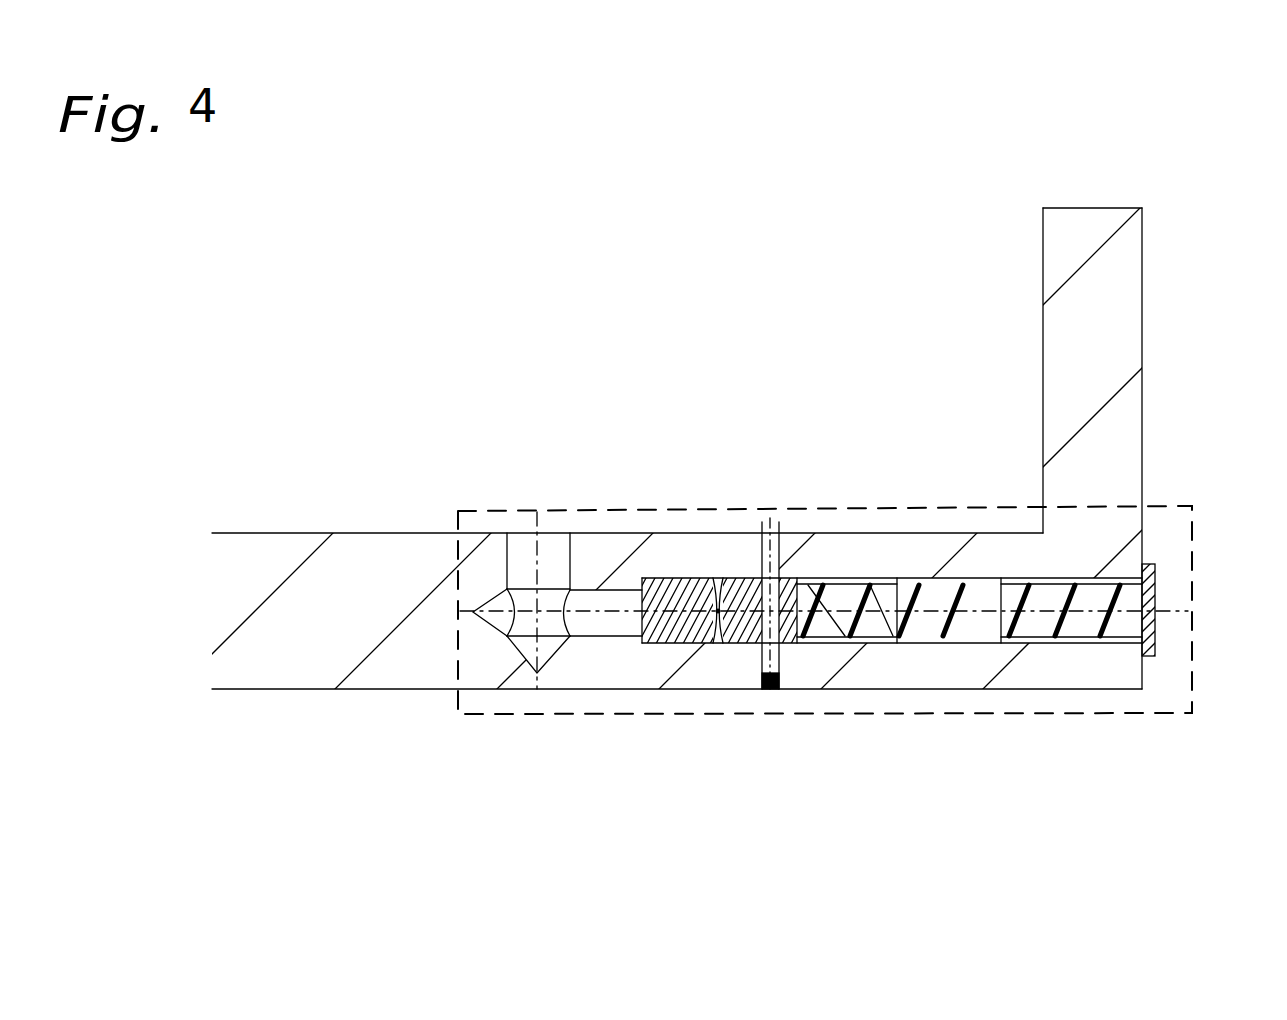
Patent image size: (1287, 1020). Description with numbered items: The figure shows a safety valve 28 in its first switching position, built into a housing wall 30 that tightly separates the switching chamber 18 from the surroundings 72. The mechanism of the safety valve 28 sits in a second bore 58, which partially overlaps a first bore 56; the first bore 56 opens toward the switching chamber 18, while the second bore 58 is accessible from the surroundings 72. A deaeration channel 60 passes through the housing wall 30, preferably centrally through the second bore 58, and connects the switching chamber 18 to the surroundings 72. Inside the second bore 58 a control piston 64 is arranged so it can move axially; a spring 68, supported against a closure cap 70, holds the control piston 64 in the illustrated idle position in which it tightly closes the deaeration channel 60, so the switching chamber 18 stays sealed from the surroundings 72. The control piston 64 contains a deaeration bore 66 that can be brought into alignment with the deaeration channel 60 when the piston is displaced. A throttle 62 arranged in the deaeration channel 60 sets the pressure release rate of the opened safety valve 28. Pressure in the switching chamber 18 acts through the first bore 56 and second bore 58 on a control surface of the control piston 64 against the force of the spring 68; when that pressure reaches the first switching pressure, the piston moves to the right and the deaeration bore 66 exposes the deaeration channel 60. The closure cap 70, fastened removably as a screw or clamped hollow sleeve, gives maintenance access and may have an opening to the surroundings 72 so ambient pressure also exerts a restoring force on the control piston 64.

The switching chamber 18 is at (824, 406).
The safety valve 28 is at (1184, 504).
The housing wall 30 is at (212, 627).
The first bore 56 is at (518, 545).
The second bore 58 is at (615, 625).
The deaeration channel 60 is at (757, 553).
The throttle 62 is at (773, 690).
The control piston 64 is at (668, 645).
The deaeration bore 66 is at (717, 578).
The spring 68 is at (950, 628).
The closure cap 70 is at (1156, 627).
The surroundings 72 is at (1131, 868).